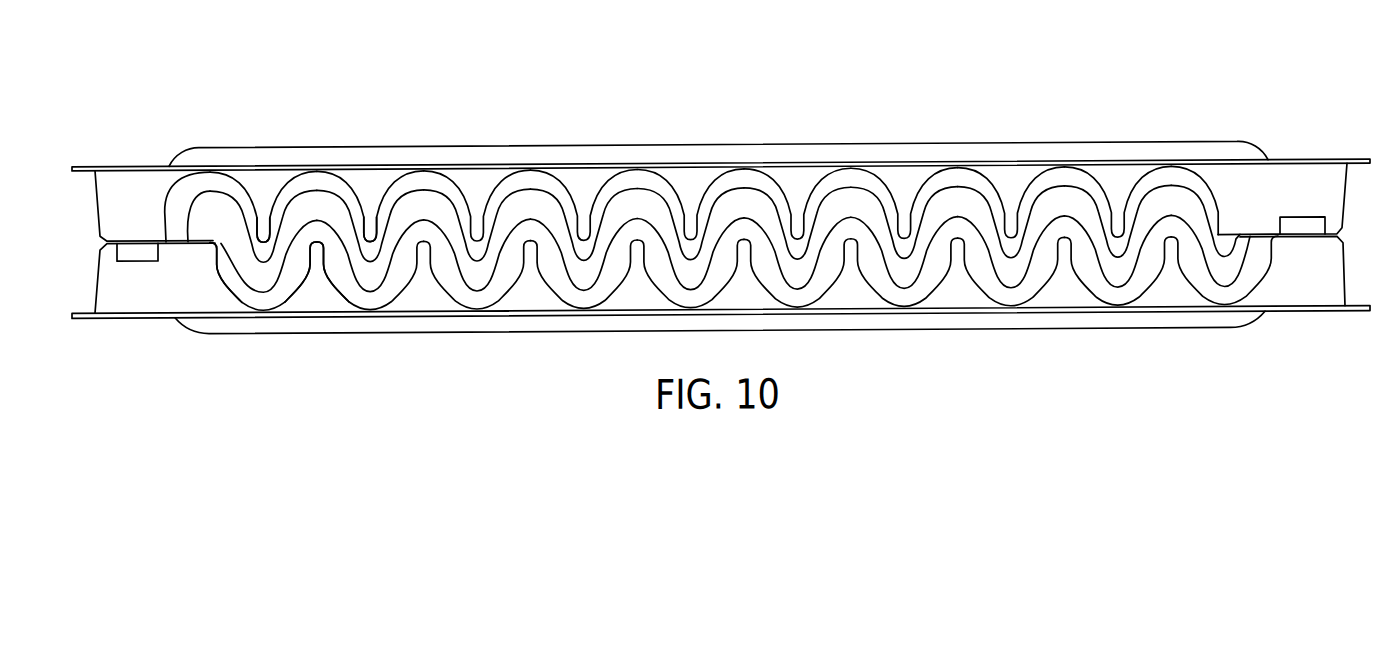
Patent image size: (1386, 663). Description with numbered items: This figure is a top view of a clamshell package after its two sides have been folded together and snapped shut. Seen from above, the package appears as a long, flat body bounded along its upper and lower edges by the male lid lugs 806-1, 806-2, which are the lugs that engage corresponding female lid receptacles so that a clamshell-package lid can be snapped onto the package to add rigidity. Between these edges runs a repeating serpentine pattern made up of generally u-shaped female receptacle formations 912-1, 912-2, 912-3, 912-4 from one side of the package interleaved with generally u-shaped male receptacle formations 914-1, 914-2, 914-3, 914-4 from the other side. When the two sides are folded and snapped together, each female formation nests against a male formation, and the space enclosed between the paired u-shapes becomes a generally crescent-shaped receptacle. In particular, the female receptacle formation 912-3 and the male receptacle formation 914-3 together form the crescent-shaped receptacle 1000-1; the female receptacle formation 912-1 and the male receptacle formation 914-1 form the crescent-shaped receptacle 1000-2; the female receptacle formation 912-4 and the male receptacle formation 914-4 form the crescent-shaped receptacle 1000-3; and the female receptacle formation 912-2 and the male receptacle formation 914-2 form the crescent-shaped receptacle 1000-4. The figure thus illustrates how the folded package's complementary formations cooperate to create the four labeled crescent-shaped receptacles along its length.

The male lid lug 806-1 is at (798, 163).
The male lid lug 806-2 is at (905, 318).
The generally u-shaped female receptacle formation 912-1 is at (268, 300).
The generally u-shaped female receptacle formation 912-2 is at (374, 274).
The generally u-shaped female receptacle formation 912-3 is at (208, 203).
The generally u-shaped female receptacle formation 912-4 is at (322, 189).
The generally u-shaped male receptacle formation 914-1 is at (265, 234).
The generally u-shaped male receptacle formation 914-2 is at (370, 240).
The generally u-shaped male receptacle formation 914-3 is at (216, 241).
The generally u-shaped male receptacle formation 914-4 is at (319, 243).
The generally crescent-shaped receptacle 1000-1 is at (210, 187).
The generally crescent-shaped receptacle 1000-2 is at (268, 275).
The generally crescent-shaped receptacle 1000-3 is at (318, 207).
The generally crescent-shaped receptacle 1000-4 is at (376, 292).